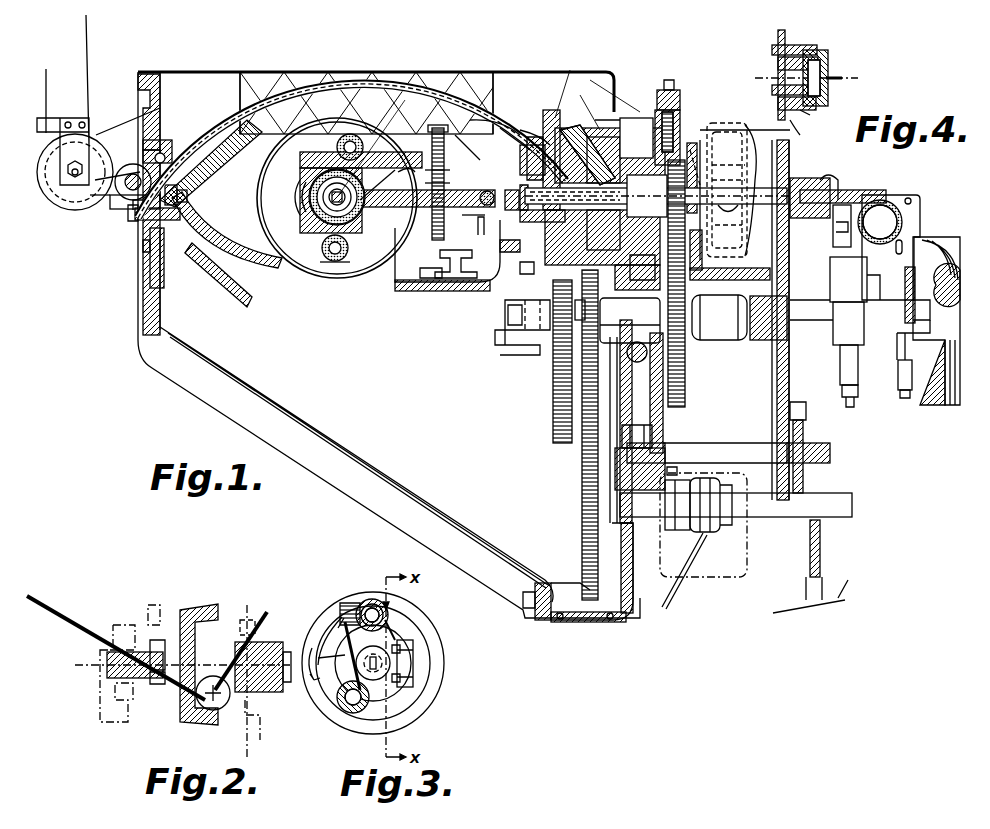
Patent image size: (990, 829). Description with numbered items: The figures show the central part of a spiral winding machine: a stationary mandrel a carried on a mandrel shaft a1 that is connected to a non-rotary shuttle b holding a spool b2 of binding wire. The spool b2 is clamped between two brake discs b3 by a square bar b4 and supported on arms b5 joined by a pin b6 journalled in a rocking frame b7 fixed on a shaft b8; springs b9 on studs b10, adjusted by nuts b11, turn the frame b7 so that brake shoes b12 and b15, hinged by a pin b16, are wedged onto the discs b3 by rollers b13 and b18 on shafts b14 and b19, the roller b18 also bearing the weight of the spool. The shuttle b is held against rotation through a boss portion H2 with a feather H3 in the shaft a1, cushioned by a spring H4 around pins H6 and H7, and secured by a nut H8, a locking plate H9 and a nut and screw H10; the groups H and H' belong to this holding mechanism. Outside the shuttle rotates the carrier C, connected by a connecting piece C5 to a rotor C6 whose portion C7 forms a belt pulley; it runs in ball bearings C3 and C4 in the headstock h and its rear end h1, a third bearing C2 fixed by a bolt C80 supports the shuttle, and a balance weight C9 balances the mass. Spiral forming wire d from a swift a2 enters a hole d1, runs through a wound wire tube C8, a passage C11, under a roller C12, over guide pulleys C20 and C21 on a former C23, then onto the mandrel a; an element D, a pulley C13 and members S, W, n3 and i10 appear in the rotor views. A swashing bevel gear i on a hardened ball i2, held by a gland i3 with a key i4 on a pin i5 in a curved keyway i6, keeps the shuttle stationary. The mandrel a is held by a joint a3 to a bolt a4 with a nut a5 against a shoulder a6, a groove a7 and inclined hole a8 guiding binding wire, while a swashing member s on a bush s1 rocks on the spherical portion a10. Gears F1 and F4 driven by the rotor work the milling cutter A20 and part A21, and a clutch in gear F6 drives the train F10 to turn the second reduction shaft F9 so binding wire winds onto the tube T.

In FIG. 1, the mandrel a is at (880, 172).
In FIG. 4, the mandrel a is at (843, 77).
In FIG. 3, the mandrel a is at (380, 660).
In FIG. 1, the mandrel shaft a1 is at (728, 173).
In FIG. 4, the mandrel shaft a1 is at (790, 50).
In FIG. 1, the swift a2 is at (728, 234).
In FIG. 1, the joint a3 is at (728, 205).
In FIG. 1, the bolt a4 is at (728, 154).
In FIG. 1, the nut a5 is at (514, 192).
In FIG. 1, the shoulder a6 is at (818, 220).
In FIG. 1, the groove a7 is at (688, 140).
In FIG. 1, the inclined hole a8 is at (468, 213).
In FIG. 4, the spherical portion a10 is at (826, 70).
In FIG. 1, the milling cutter A20 is at (838, 240).
In FIG. 1, the pipe A21 is at (812, 350).
In FIG. 1, the shuttle b is at (412, 292).
In FIG. 1, the spool b2 is at (372, 140).
In FIG. 1, the brake discs b3 is at (308, 205).
In FIG. 1, the square bar b4 is at (400, 207).
In FIG. 1, the arms b5 is at (322, 193).
In FIG. 1, the pin b6 is at (488, 190).
In FIG. 1, the rocking frame b7 is at (470, 285).
In FIG. 1, the shaft b8 is at (456, 264).
In FIG. 1, the springs b9 is at (447, 181).
In FIG. 1, the studs b10 is at (446, 170).
In FIG. 1, the nuts b11 is at (445, 146).
In FIG. 1, the brake shoe b12 is at (320, 155).
In FIG. 1, the ball bearing roller b13 is at (380, 150).
In FIG. 1, the shaft b14 is at (356, 138).
In FIG. 1, the brake shoe b15 is at (300, 212).
In FIG. 1, the pin b16 is at (409, 161).
In FIG. 1, the ball bearing roller b18 is at (330, 260).
In FIG. 1, the shaft b19 is at (338, 262).
In FIG. 1, the carrier C is at (238, 268).
In FIG. 1, the ball bearing C2 is at (190, 190).
In FIG. 1, the ball bearing C3 is at (172, 146).
In FIG. 1, the ball bearing C4 is at (530, 136).
In FIG. 1, the connecting piece C5 is at (586, 126).
In FIG. 1, the rotor C6 is at (730, 197).
In FIG. 2, the rotor C6 is at (172, 625).
In FIG. 3, the rotor C6 is at (352, 728).
In FIG. 1, the driving belt pulley portion C7 is at (740, 128).
In FIG. 1, the tube C8 is at (448, 82).
In FIG. 1, the balance weight C9 is at (235, 300).
In FIG. 1, the passage C11 is at (598, 136).
In FIG. 2, the passage C11 is at (248, 620).
In FIG. 3, the passage C11 is at (390, 628).
In FIG. 1, the roller C12 is at (739, 317).
In FIG. 2, the roller C12 is at (262, 700).
In FIG. 3, the roller C13 is at (368, 598).
In FIG. 3, the guide pulley C20 is at (343, 703).
In FIG. 3, the guide pulley C21 is at (385, 610).
In FIG. 4, the former C23 is at (800, 135).
In FIG. 3, the former C23 is at (414, 670).
In FIG. 1, the bolt C80 is at (200, 204).
In FIG. 1, the spiral forming wire d is at (110, 205).
In FIG. 2, the spiral forming wire d is at (30, 593).
In FIG. 3, the spiral forming wire d is at (340, 640).
In FIG. 1, the hole d1 is at (133, 164).
In FIG. 1, the lever D is at (122, 210).
In FIG. 1, the gear F1 is at (705, 140).
In FIG. 1, the gear F4 is at (686, 375).
In FIG. 1, the gear F6 is at (637, 362).
In FIG. 1, the second reduction shaft F9 is at (778, 520).
In FIG. 1, the train of wheels F10 is at (582, 450).
In FIG. 1, the headstock h is at (680, 414).
In FIG. 1, the rear end of headstock h1 is at (164, 282).
In FIG. 1, the lever H is at (484, 226).
In FIG. 1, the lever arm H' is at (509, 131).
In FIG. 1, the boss portion H2 is at (506, 250).
In FIG. 1, the feather H3 is at (577, 102).
In FIG. 1, the cushion spring H4 is at (525, 274).
In FIG. 1, the pin H6 is at (519, 327).
In FIG. 1, the pin H7 is at (527, 315).
In FIG. 1, the nut H8 is at (509, 204).
In FIG. 1, the locking plate H9 is at (492, 119).
In FIG. 1, the nut and screw H10 is at (465, 139).
In FIG. 1, the swashing bevel gear i is at (596, 93).
In FIG. 1, the hardened ball i2 is at (636, 138).
In FIG. 1, the gland member i3 is at (617, 113).
In FIG. 1, the key i4 is at (630, 320).
In FIG. 1, the pin i5 is at (570, 361).
In FIG. 1, the curved keyway i6 is at (642, 269).
In FIG. 1, the pin i10 is at (584, 308).
In FIG. 1, the wheel n3 is at (75, 210).
In FIG. 4, the swashing member s is at (828, 100).
In FIG. 4, the inclined faced bush s1 is at (810, 113).
In FIG. 1, the shaft S is at (836, 186).
In FIG. 1, the tube T is at (912, 195).
In FIG. 3, the pointer W is at (390, 603).